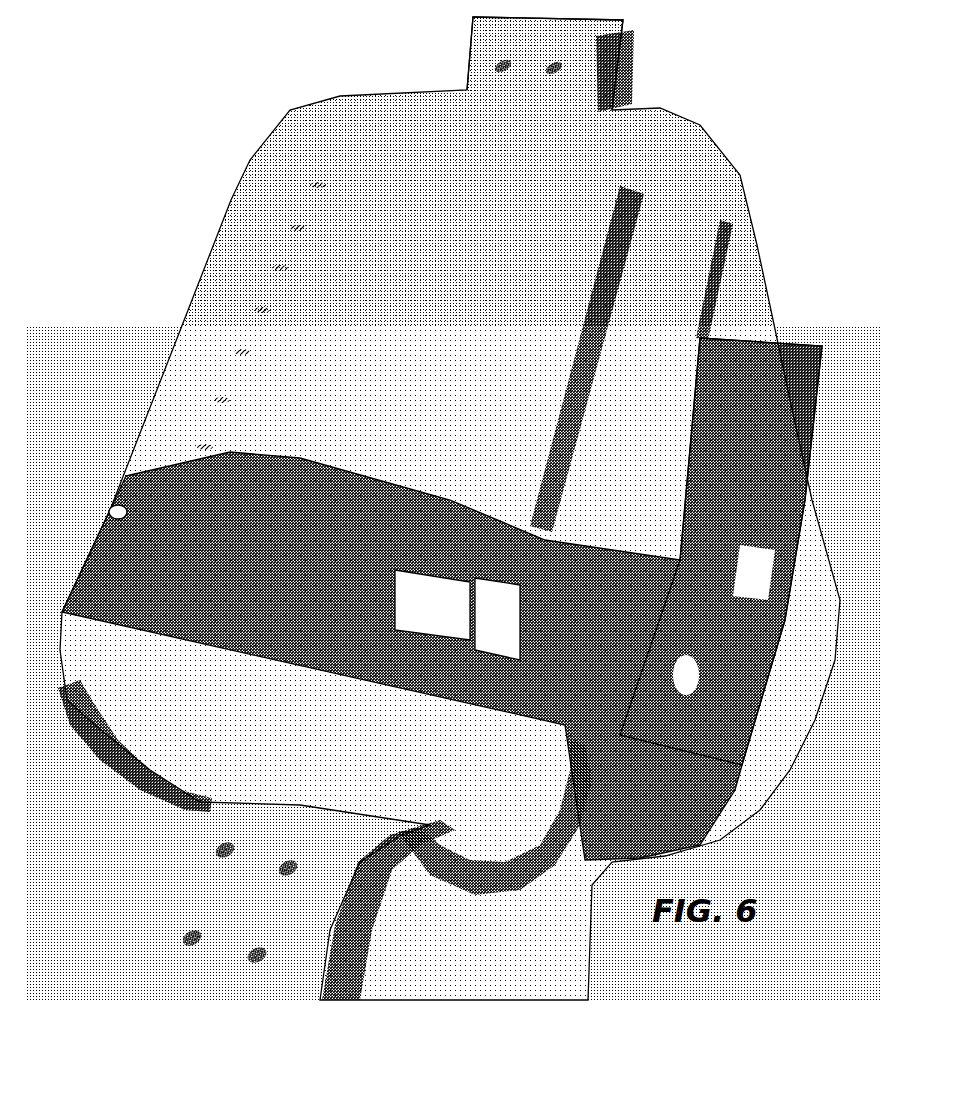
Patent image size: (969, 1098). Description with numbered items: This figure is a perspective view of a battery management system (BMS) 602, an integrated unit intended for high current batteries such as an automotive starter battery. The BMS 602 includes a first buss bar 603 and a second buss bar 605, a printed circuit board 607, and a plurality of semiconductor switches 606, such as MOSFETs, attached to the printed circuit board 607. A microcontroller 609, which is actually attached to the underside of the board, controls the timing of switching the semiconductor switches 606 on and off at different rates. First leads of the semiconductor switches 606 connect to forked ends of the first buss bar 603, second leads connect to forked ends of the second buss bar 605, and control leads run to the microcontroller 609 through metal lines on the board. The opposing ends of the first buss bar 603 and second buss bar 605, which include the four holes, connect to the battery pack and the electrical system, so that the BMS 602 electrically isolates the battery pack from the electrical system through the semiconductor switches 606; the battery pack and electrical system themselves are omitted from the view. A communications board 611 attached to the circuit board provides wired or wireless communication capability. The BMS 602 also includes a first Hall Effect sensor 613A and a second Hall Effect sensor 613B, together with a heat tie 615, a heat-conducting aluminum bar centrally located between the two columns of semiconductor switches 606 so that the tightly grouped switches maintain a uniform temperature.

The battery management system 602 is at (160, 122).
The first buss bar 603 is at (465, 92).
The second buss bar 605 is at (198, 802).
The semiconductor switches 606 is at (335, 197).
The printed circuit board 607 is at (124, 474).
The microcontroller 609 is at (303, 672).
The communications board 611 is at (652, 800).
The first Hall Effect sensor 613A is at (108, 512).
The second Hall Effect sensor 613B is at (510, 718).
The heat tie 615 is at (551, 221).